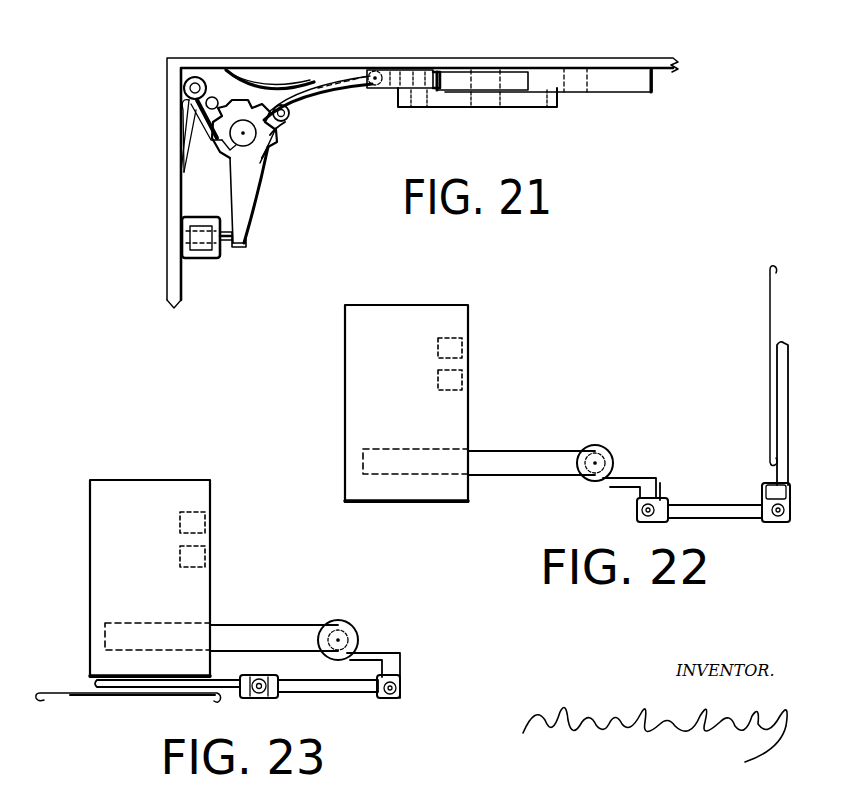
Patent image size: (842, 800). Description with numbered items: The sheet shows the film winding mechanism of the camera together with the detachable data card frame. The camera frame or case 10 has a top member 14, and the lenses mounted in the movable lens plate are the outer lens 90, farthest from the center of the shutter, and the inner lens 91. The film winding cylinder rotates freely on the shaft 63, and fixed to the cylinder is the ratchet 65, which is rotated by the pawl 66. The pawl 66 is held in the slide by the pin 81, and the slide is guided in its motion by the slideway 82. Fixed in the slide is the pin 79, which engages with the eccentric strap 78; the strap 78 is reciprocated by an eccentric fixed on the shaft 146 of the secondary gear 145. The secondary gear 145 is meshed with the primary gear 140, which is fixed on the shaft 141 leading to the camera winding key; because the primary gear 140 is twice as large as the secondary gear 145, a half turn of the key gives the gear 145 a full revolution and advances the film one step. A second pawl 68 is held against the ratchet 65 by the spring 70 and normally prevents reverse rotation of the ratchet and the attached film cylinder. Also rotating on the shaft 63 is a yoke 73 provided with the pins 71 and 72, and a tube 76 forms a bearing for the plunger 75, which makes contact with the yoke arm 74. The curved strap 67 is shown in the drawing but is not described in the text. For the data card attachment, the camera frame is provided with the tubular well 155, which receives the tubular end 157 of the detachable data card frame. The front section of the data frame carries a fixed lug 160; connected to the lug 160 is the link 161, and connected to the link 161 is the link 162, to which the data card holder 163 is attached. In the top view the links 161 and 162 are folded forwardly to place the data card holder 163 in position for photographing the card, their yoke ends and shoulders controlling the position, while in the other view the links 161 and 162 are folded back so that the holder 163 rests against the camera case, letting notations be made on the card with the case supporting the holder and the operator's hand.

In FIG. 22, the frame or case 10 is at (345, 407).
In FIG. 23, the frame or case 10 is at (133, 478).
In FIG. 22, the top member 14 is at (423, 412).
In FIG. 23, the top member 14 is at (127, 578).
In FIG. 21, the shaft 63 is at (246, 138).
In FIG. 21, the ratchet 65 is at (230, 150).
In FIG. 21, the pawl 66 is at (288, 100).
In FIG. 21, the spring strap 67 is at (251, 80).
In FIG. 21, the pawl 68 is at (197, 107).
In FIG. 21, the spring 70 is at (183, 140).
In FIG. 21, the pin 71 is at (287, 118).
In FIG. 21, the pin 72 is at (211, 97).
In FIG. 21, the yoke 73 is at (279, 128).
In FIG. 21, the yoke arm 74 is at (245, 233).
In FIG. 21, the plunger 75 is at (193, 233).
In FIG. 21, the tube 76 is at (198, 253).
In FIG. 21, the eccentric strap 78 is at (443, 100).
In FIG. 21, the pin 79 is at (418, 80).
In FIG. 21, the pin 81 is at (375, 88).
In FIG. 21, the slideway 82 is at (330, 78).
In FIG. 22, the outer lens 90 is at (453, 347).
In FIG. 23, the outer lens 90 is at (200, 520).
In FIG. 22, the inner lens 91 is at (452, 388).
In FIG. 23, the inner lens 91 is at (200, 563).
In FIG. 21, the primary gear 140 is at (628, 85).
In FIG. 21, the shaft 141 is at (582, 85).
In FIG. 21, the secondary gear 145 is at (515, 83).
In FIG. 21, the shaft 146 is at (490, 88).
In FIG. 22, the tubular well 155 is at (410, 468).
In FIG. 23, the tubular well 155 is at (143, 638).
In FIG. 22, the tubular end 157 is at (458, 468).
In FIG. 23, the tubular end 157 is at (195, 633).
In FIG. 22, the lug 160 is at (623, 480).
In FIG. 23, the lug 160 is at (385, 660).
In FIG. 22, the link 161 is at (687, 506).
In FIG. 23, the link 161 is at (342, 685).
In FIG. 22, the link 162 is at (778, 447).
In FIG. 23, the link 162 is at (225, 683).
In FIG. 22, the data card holder 163 is at (770, 325).
In FIG. 23, the data card holder 163 is at (72, 692).